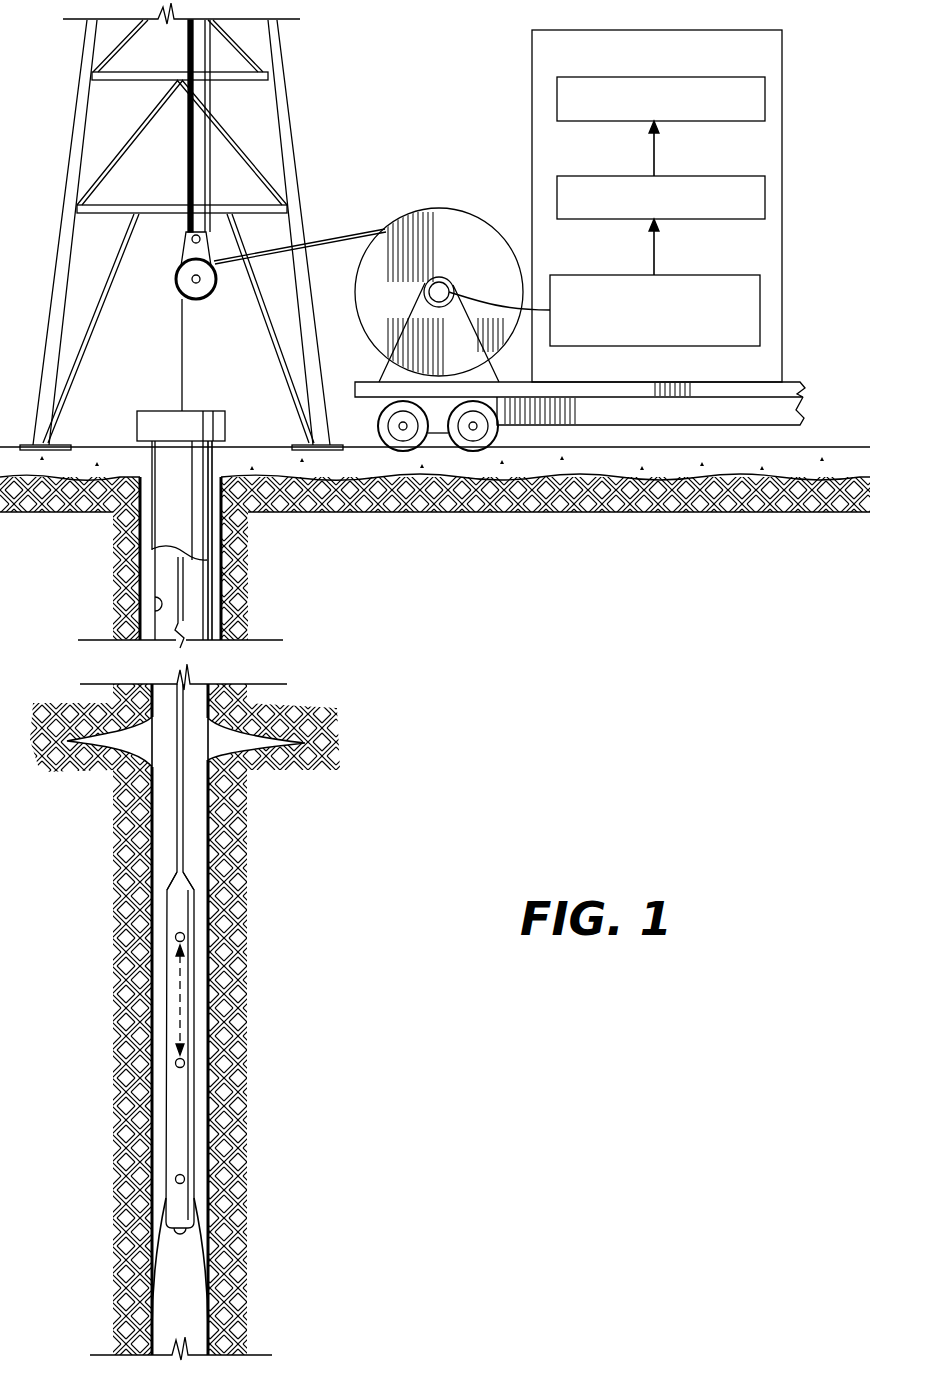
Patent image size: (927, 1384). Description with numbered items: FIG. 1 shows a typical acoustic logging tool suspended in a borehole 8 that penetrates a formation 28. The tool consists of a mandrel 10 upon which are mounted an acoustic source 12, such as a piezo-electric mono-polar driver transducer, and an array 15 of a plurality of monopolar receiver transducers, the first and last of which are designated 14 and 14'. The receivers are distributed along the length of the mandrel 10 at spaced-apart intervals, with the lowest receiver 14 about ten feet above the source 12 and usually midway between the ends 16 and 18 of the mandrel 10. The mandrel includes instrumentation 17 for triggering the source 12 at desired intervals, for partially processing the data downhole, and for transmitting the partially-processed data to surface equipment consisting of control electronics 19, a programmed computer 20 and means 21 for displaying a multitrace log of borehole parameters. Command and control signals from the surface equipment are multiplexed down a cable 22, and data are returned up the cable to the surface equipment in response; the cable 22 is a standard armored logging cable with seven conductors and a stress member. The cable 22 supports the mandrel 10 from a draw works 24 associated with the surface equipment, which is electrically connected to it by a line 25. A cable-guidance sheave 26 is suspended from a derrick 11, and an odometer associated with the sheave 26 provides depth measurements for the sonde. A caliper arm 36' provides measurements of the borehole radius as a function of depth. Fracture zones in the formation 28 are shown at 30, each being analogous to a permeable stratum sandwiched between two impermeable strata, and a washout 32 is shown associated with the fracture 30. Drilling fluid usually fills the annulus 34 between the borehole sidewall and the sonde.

The borehole 8 is at (153, 597).
The mandrel 10 is at (163, 1018).
The derrick 11 is at (287, 114).
The acoustic source 12 is at (177, 1179).
The receiver transducer 14 is at (118, 1053).
The receiver transducer 14' is at (117, 928).
The array 15 is at (180, 975).
The end of mandrel 16 is at (177, 873).
The instrumentation 17 is at (178, 902).
The end of mandrel 18 is at (165, 1240).
The control electronics 19 is at (675, 275).
The programmed computer 20 is at (678, 176).
The means for displaying a multitrace log 21 is at (678, 77).
The cable 22 is at (186, 384).
The draw works 24 is at (439, 207).
The line 25 is at (501, 311).
The cable-guidance sheave 26 is at (204, 300).
The formation 28 is at (332, 1033).
The fracture zone 30 is at (92, 743).
The washout 32 is at (110, 718).
The annulus 34 is at (162, 1118).
The caliper arm 36' is at (256, 1264).